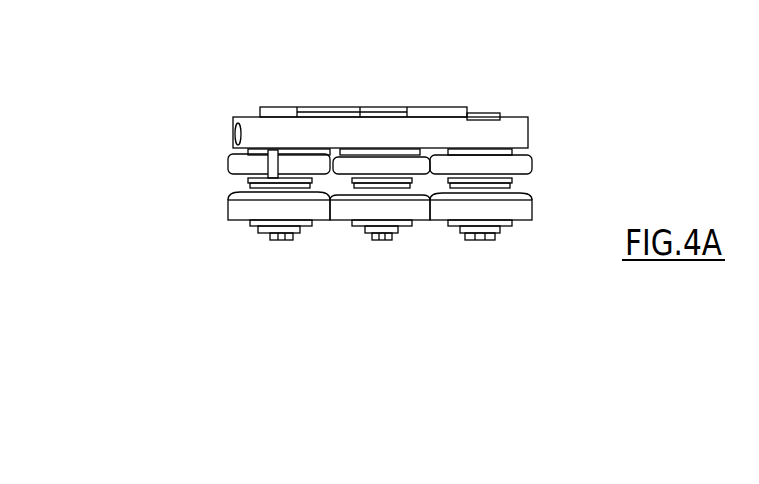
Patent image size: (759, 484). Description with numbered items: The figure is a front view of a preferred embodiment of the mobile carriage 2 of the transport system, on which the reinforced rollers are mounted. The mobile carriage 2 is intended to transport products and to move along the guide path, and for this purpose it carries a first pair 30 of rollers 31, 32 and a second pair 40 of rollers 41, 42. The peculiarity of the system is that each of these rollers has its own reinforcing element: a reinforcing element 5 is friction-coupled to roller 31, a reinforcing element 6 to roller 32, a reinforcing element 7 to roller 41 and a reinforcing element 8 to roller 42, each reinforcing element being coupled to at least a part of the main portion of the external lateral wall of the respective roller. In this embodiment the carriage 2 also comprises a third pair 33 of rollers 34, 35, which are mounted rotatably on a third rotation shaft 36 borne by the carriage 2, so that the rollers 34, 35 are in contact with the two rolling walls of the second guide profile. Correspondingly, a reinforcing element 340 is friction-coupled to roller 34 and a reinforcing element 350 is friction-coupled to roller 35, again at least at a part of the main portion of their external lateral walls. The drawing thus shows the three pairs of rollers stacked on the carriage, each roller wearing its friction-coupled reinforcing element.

The mobile carriage 2 is at (506, 130).
The reinforcing element 5 is at (367, 165).
The reinforcing element 7 is at (480, 165).
The roller 31 is at (333, 162).
The third pair of rollers 33 is at (210, 182).
The roller 34 is at (240, 175).
The reinforcing element 340 is at (245, 179).
The roller 35 is at (250, 197).
The reinforcing element 350 is at (240, 212).
The third rotation shaft 36 is at (282, 232).
The roller 32 is at (345, 205).
The reinforcing element 6 is at (347, 213).
The first pair of rollers 30 is at (417, 234).
The second pair of rollers 40 is at (552, 202).
The roller 41 is at (525, 177).
The roller 42 is at (548, 205).
The reinforcing element 8 is at (487, 212).